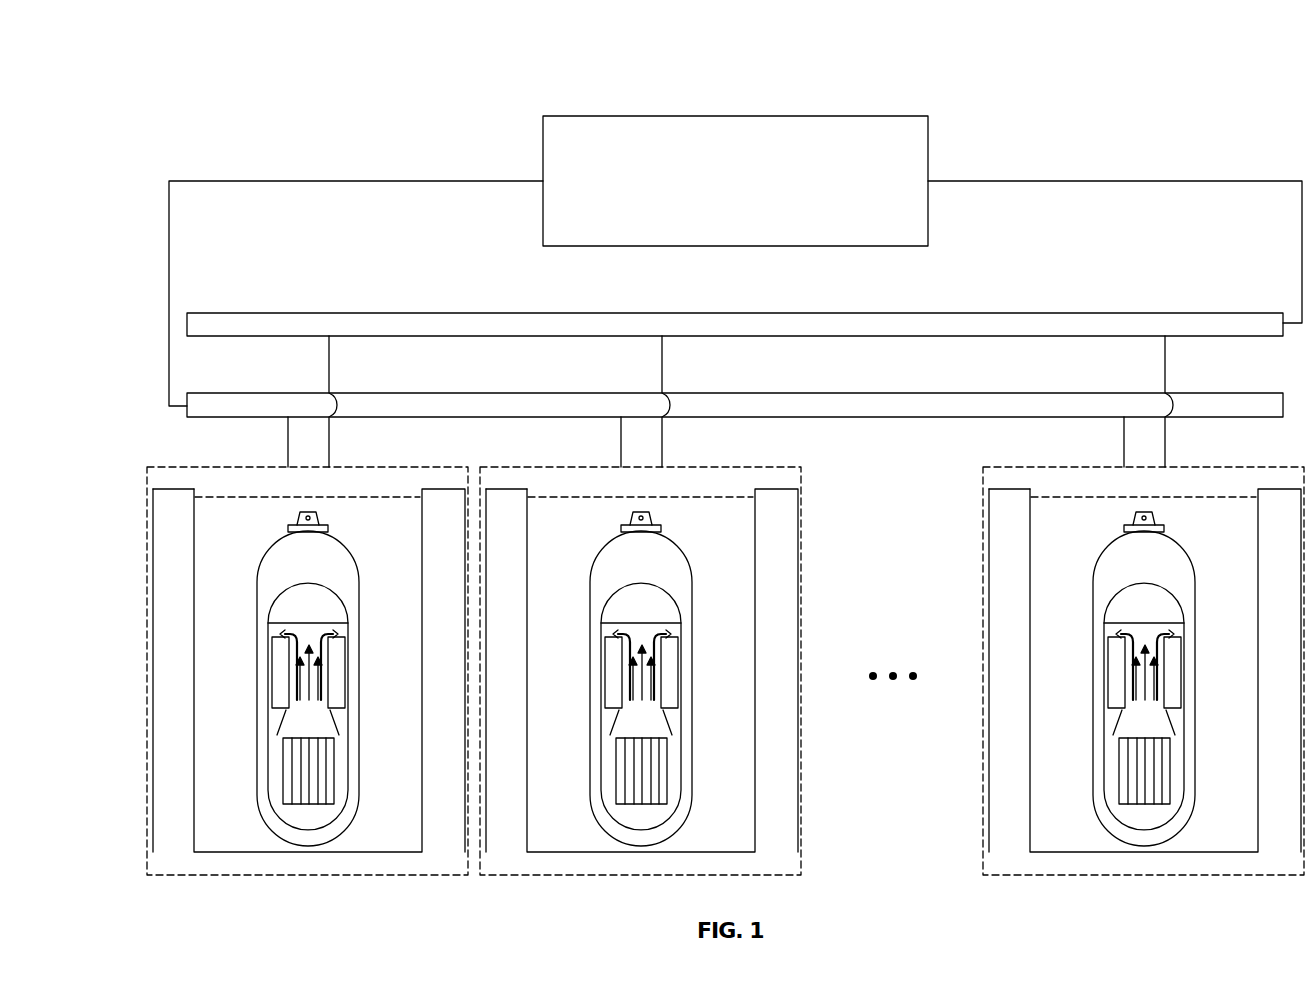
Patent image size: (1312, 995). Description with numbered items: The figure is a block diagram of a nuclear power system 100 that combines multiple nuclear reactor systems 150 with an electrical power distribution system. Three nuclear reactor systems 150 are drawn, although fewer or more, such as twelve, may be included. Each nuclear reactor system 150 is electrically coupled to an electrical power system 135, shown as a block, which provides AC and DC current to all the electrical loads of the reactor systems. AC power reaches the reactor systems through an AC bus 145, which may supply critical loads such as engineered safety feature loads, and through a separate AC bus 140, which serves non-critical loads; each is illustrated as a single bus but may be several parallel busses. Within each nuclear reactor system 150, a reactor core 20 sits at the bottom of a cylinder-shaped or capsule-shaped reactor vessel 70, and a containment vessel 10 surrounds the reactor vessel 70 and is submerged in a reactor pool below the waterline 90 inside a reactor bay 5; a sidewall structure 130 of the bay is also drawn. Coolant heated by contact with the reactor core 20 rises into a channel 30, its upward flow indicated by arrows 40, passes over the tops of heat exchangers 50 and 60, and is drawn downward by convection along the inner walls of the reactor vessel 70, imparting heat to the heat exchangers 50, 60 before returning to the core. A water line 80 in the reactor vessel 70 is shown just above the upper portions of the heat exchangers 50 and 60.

The nuclear power system 100 is at (246, 92).
The electrical power system 135 is at (757, 194).
The AC bus 140 is at (699, 312).
The AC bus 145 is at (702, 392).
The nuclear reactor system 150 is at (216, 466).
The waterline 90 is at (382, 486).
The reactor bay 5 is at (414, 652).
The pool wall top 130 is at (181, 496).
The containment vessel 10 is at (298, 846).
The reactor vessel 70 is at (352, 782).
The water line 80 is at (298, 612).
The heat exchanger 50 is at (279, 667).
The heat exchanger 60 is at (338, 655).
The arrows 40 is at (313, 677).
The channel 30 is at (319, 731).
The reactor core 20 is at (284, 775).